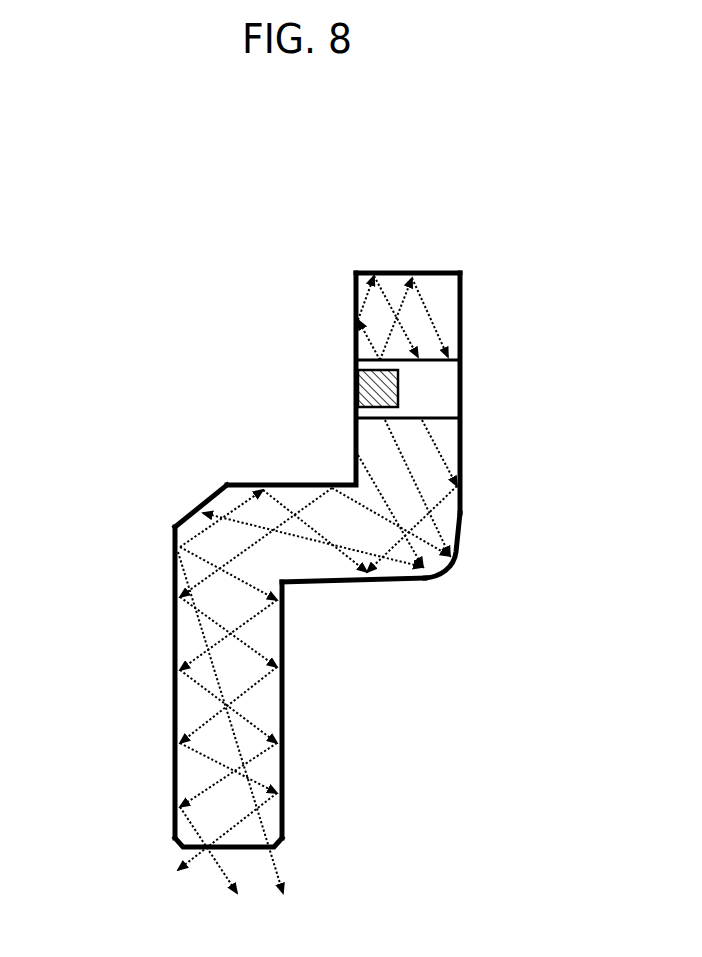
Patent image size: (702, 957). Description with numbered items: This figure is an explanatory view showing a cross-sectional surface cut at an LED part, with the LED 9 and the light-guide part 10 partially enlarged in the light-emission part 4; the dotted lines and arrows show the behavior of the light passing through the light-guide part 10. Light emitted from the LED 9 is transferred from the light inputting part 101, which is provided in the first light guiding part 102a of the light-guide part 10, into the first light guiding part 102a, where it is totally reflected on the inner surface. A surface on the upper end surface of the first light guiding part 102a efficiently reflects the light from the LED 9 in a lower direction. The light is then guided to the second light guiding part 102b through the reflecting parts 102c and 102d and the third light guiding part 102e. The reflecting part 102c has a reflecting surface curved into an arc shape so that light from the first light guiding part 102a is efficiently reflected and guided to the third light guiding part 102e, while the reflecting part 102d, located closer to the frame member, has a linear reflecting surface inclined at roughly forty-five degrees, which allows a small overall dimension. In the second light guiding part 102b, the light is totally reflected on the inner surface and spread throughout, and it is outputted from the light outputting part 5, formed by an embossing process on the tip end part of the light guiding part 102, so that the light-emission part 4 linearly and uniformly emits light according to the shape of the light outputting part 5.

The light-guide part 10 is at (357, 263).
The LED 9 is at (380, 370).
The light guiding part 102 is at (447, 268).
The light inputting part 101 is at (363, 367).
The first light guiding part 102a is at (452, 447).
The second light guiding part 102b is at (283, 768).
The reflecting part 102c is at (453, 568).
The reflecting part 102d is at (210, 510).
The third light guiding part 102e is at (322, 568).
The light-emission part 4 is at (163, 717).
The light outputting part 5 is at (175, 853).